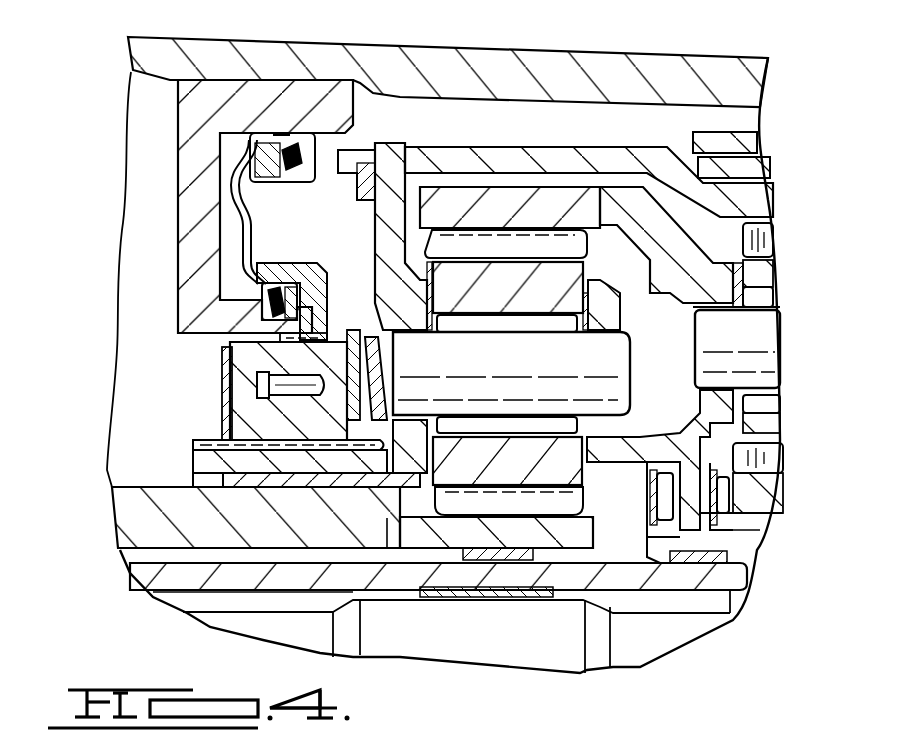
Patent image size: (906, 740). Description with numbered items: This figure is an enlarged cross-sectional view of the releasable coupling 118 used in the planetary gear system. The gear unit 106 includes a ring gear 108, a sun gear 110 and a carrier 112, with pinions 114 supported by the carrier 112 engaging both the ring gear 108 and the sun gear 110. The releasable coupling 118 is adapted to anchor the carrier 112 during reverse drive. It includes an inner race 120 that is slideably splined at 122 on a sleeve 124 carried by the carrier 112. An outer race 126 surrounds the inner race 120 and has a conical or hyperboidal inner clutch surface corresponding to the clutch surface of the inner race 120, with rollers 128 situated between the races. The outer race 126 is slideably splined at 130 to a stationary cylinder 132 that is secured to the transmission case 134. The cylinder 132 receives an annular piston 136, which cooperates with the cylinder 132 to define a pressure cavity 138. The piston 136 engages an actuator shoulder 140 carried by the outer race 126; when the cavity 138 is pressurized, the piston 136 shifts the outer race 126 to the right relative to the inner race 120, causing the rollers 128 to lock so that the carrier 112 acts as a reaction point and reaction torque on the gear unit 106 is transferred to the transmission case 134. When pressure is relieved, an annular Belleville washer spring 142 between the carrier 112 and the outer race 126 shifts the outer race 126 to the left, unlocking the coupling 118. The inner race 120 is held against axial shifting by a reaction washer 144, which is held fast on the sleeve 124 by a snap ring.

The gear unit 106 is at (590, 208).
The ring gear 108 is at (513, 197).
The sun gear 110 is at (413, 498).
The carrier 112 is at (550, 367).
The pinions 114 is at (571, 470).
The releasable coupling 118 is at (250, 357).
The inner race 120 is at (280, 441).
The spline 122 is at (292, 452).
The sleeve 124 is at (313, 460).
The outer race 126 is at (257, 368).
The rollers 128 is at (222, 438).
The spline 130 is at (262, 321).
The stationary cylinder 132 is at (188, 172).
The transmission case 134 is at (398, 60).
The annular piston 136 is at (250, 231).
The pressure cavity 138 is at (233, 150).
The actuator shoulder 140 is at (340, 303).
The Belleville washer spring 142 is at (390, 380).
The reaction washer 144 is at (257, 393).